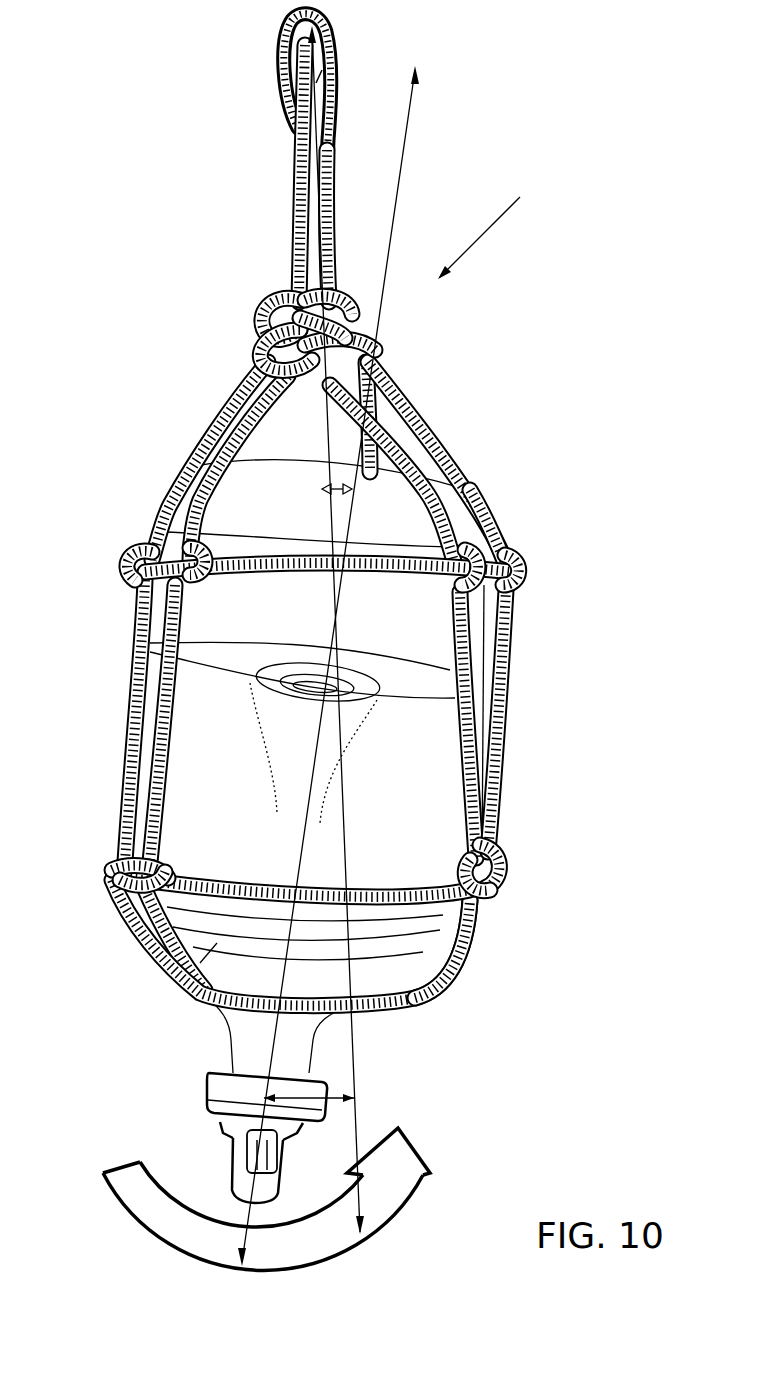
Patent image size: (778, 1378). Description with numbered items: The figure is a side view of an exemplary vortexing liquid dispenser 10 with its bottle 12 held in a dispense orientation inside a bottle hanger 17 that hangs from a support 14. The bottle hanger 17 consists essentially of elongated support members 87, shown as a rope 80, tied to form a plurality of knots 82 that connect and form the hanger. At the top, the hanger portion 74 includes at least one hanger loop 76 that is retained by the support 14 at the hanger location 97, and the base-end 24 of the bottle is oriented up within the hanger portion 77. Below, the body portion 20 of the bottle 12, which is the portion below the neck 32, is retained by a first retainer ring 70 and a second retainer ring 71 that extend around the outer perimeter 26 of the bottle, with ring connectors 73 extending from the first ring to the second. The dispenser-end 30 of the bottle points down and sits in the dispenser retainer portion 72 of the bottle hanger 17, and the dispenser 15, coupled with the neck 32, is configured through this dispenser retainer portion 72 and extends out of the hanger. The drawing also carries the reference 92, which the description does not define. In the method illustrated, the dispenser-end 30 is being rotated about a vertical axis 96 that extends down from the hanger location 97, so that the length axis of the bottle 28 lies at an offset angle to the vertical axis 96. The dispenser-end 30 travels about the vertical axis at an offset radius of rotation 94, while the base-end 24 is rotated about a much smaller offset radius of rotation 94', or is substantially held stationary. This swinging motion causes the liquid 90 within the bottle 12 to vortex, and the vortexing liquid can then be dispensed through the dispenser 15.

The vortexing liquid dispenser 10 is at (492, 225).
The bottle 12 is at (440, 760).
The support 14 is at (278, 33).
The dispenser 15 is at (247, 1183).
The bottle hanger 17 is at (413, 412).
The body portion 20 is at (203, 771).
The base-end 24 is at (447, 500).
The outer perimeter 26 is at (510, 625).
The length axis of the bottle 28 is at (397, 197).
The dispenser-end 30 is at (170, 976).
The neck 32 is at (245, 1047).
The first retainer ring 70 is at (293, 577).
The second retainer ring 71 is at (303, 884).
The dispenser retainer portion 72 is at (462, 980).
The ring connectors 73 is at (133, 665).
The hanger portion 74 is at (297, 177).
The hanger loop 76 is at (292, 210).
The hanger portion 77 is at (212, 434).
The rope 80 is at (178, 493).
The knots 82 is at (122, 563).
The elongated support members 87 is at (487, 514).
The liquid 90 is at (340, 650).
The flow lines 92 is at (332, 722).
The offset radius of rotation 94 is at (309, 1062).
The offset radius of rotation 94' is at (306, 503).
The vertical axis 96 is at (358, 1102).
The hanger location 97 is at (316, 83).